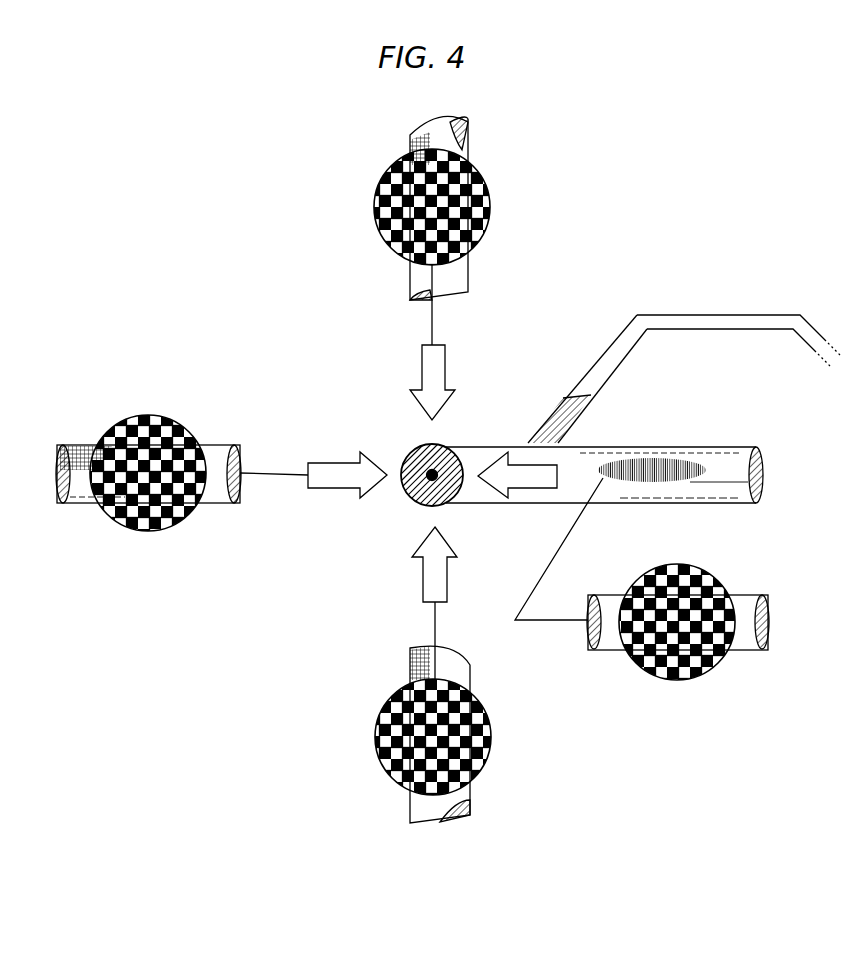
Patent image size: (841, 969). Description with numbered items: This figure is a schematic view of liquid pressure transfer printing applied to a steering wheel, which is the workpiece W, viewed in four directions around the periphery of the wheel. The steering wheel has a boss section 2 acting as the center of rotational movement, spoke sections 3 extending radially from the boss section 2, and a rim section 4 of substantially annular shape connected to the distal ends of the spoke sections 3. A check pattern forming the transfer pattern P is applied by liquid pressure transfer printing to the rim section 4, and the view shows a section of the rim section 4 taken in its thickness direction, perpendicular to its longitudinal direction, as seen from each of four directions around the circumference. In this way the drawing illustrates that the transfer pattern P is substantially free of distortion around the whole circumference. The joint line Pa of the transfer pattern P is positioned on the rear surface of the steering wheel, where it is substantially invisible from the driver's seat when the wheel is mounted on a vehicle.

The boss section 2 is at (690, 315).
The spoke sections 3 is at (614, 350).
The rim section 4 is at (412, 281).
The transfer pattern P is at (398, 172).
The joint line Pa is at (458, 148).
The workpiece W is at (541, 497).